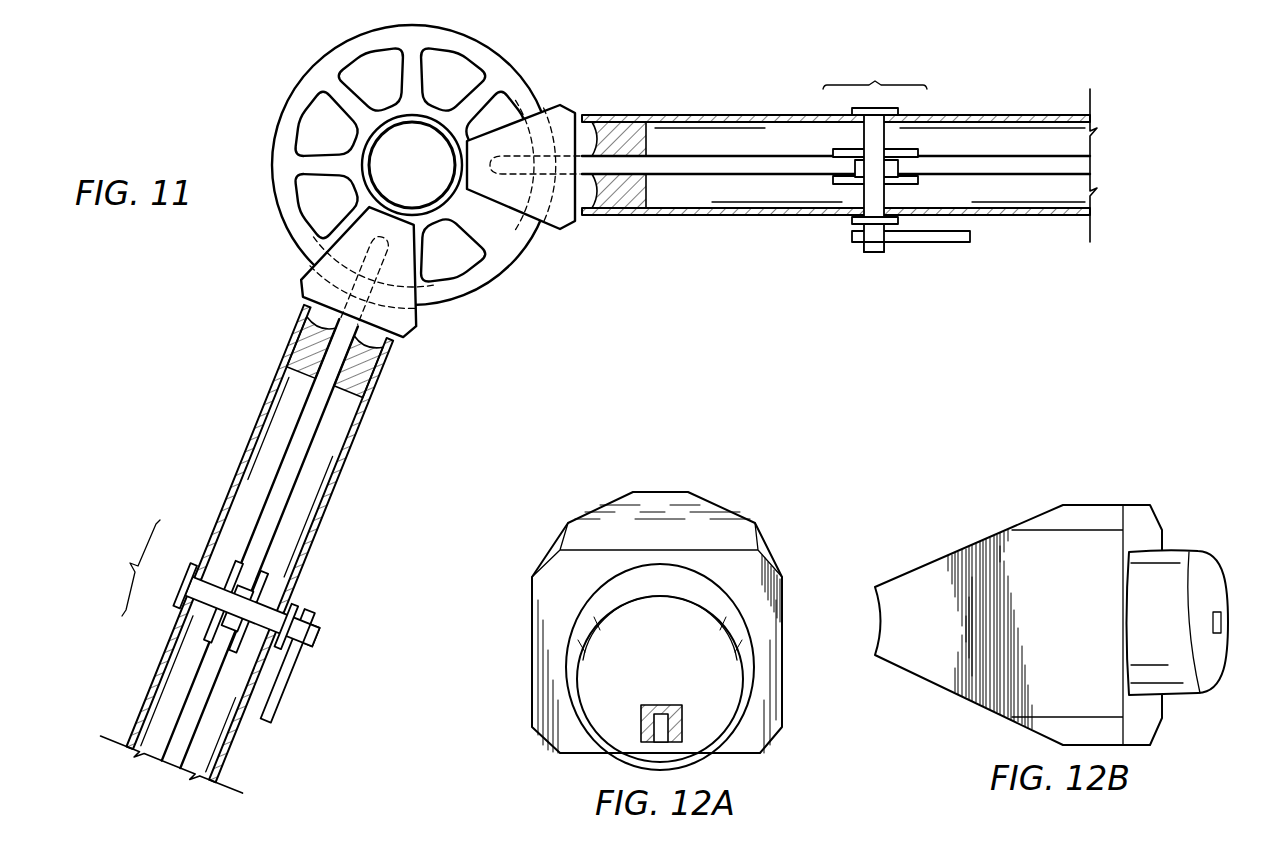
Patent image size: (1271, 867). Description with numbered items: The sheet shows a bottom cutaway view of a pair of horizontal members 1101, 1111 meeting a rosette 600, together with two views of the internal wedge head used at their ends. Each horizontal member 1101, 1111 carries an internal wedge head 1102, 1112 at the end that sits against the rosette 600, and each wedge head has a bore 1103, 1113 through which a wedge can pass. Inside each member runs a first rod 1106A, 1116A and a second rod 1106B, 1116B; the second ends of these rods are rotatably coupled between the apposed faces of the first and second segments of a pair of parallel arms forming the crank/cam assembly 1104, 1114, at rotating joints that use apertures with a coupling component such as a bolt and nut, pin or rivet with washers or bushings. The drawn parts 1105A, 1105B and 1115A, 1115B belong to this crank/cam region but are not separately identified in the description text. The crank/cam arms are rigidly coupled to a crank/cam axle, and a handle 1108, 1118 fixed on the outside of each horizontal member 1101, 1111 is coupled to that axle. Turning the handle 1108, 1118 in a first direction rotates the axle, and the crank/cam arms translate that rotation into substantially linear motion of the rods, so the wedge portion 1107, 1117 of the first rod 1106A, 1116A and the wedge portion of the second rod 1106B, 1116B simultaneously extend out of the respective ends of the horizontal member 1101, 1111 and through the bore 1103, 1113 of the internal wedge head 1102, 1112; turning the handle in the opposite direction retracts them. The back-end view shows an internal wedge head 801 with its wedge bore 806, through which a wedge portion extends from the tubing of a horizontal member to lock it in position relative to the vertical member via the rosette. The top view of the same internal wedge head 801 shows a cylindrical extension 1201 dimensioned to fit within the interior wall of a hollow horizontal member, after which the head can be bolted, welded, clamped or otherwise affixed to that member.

In FIG. 11, the rosette 600 is at (272, 160).
In FIG. 11, the horizontal member 1101 is at (683, 116).
In FIG. 11, the internal wedge head 1102 is at (566, 228).
In FIG. 11, the bore 1103 is at (608, 118).
In FIG. 11, the crank/cam assembly 1104 is at (875, 154).
In FIG. 11, the upper clamp plate 1105A is at (918, 150).
In FIG. 11, the lower clamp plate 1105B is at (833, 190).
In FIG. 11, the first rod 1106A is at (785, 150).
In FIG. 11, the second rod 1106B is at (1025, 178).
In FIG. 11, the wedge portion 1107 is at (503, 158).
In FIG. 11, the handle 1108 is at (930, 243).
In FIG. 11, the horizontal member 1111 is at (247, 447).
In FIG. 11, the internal wedge head 1112 is at (300, 290).
In FIG. 11, the bore 1113 is at (292, 358).
In FIG. 11, the crank/cam assembly 1114 is at (205, 589).
In FIG. 11, the upper clamp plate 1115A is at (270, 585).
In FIG. 11, the lower clamp plate 1115B is at (205, 636).
In FIG. 11, the first rod 1116A is at (290, 516).
In FIG. 11, the second rod 1116B is at (180, 712).
In FIG. 11, the wedge portion 1117 is at (305, 236).
In FIG. 11, the handle 1118 is at (287, 700).
In FIG. 12A, the internal wedge head 801 is at (665, 497).
In FIG. 12B, the internal wedge head 801 is at (1085, 505).
In FIG. 12A, the wedge bore 806 is at (676, 705).
In FIG. 12B, the cylindrical extension 1201 is at (1185, 548).